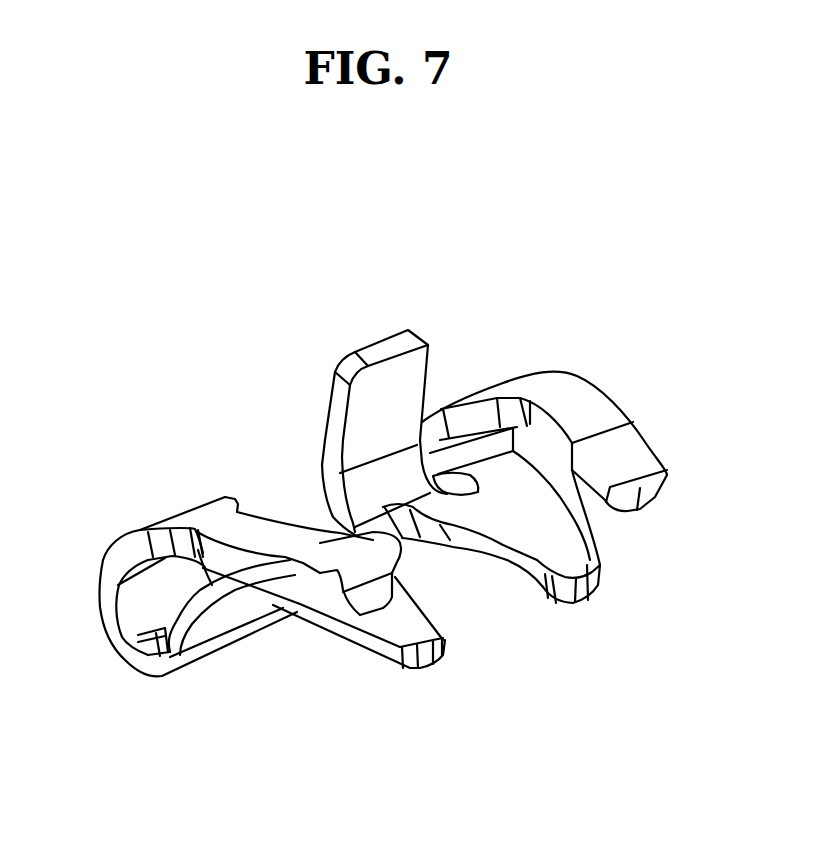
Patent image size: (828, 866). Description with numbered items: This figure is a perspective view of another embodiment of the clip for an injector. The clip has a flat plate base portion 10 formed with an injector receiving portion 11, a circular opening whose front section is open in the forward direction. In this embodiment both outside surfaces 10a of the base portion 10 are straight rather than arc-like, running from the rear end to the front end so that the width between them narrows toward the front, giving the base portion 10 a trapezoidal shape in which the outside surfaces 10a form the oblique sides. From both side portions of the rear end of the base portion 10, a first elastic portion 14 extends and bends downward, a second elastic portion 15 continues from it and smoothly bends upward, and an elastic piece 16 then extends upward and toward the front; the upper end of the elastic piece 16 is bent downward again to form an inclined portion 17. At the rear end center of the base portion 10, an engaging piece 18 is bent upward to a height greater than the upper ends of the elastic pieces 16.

The base portion 10 is at (440, 647).
The outside surfaces 10a is at (587, 521).
The injector receiving portion 11 is at (468, 586).
The first elastic portion 14 is at (210, 623).
The second elastic portion 15 is at (107, 590).
The elastic piece 16 is at (257, 537).
The inclined portion 17 is at (354, 580).
The engaging piece 18 is at (388, 336).